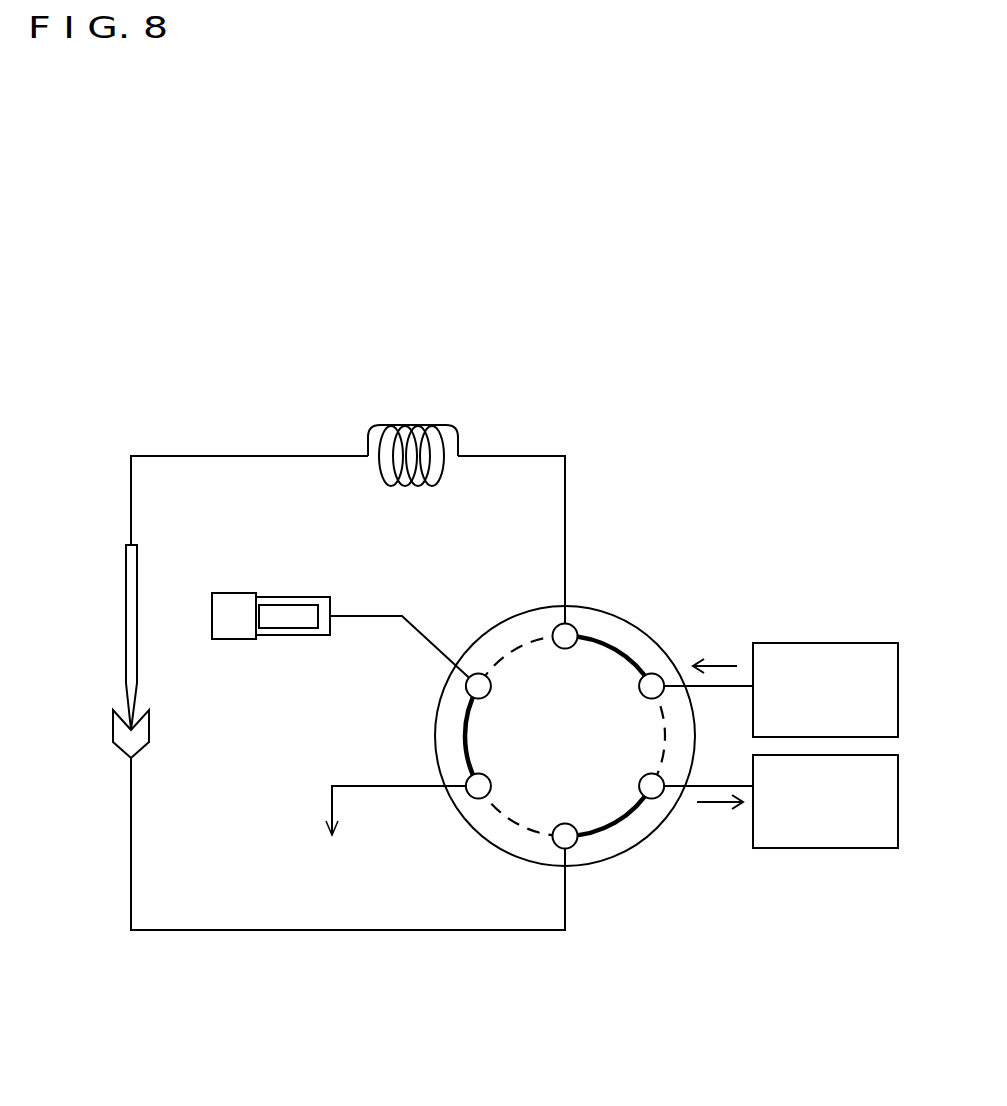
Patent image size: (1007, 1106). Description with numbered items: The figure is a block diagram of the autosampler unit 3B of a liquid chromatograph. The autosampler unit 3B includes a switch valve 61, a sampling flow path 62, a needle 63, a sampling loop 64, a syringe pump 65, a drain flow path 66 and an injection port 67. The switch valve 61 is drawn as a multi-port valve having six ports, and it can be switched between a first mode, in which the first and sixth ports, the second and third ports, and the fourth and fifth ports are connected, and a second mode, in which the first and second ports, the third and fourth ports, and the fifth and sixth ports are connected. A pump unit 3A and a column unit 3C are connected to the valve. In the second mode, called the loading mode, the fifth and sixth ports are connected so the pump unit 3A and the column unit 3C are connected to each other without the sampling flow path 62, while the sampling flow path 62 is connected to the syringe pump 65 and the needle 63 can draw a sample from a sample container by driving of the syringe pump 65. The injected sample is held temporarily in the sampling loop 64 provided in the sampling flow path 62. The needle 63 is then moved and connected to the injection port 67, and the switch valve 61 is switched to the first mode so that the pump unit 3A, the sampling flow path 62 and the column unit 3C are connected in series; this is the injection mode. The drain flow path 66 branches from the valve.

The switch valve 61 is at (593, 608).
The sampling flow path 62 is at (528, 455).
The needle 63 is at (138, 568).
The sampling loop 64 is at (425, 423).
The syringe pump 65 is at (288, 597).
The drain flow path 66 is at (332, 787).
The injection port 67 is at (140, 752).
The pump unit 3A is at (848, 643).
The autosampler unit 3B is at (618, 925).
The column unit 3C is at (848, 848).